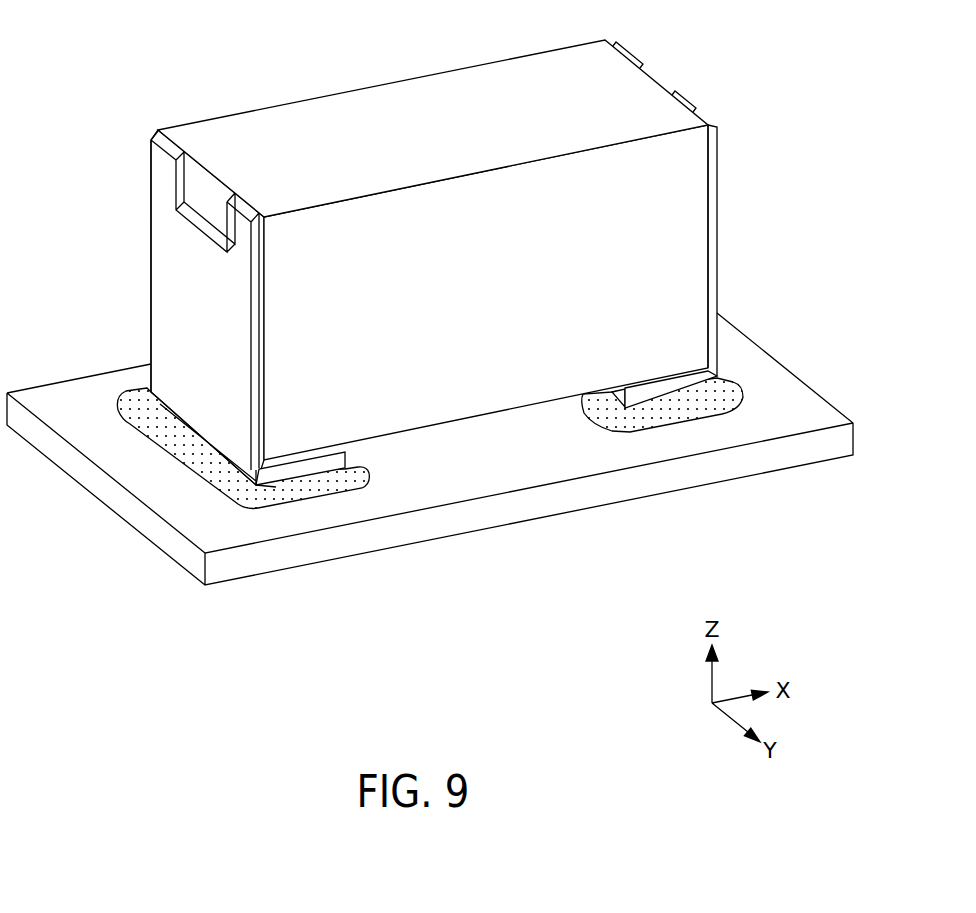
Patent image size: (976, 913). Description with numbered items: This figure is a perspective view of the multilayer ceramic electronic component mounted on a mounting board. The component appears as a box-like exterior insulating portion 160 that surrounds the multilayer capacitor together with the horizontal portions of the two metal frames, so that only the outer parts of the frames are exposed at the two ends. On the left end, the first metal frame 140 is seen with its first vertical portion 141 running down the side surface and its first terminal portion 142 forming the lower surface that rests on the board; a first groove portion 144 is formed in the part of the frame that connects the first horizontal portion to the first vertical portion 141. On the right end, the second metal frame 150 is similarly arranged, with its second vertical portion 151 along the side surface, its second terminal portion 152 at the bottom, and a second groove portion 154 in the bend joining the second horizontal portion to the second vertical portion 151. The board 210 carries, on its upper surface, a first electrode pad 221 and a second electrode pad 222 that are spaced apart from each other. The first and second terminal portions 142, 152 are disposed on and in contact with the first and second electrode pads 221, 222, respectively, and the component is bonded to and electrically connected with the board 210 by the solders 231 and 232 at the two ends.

The first metal frame 140 is at (209, 377).
The first vertical portion 141 is at (152, 316).
The first terminal portion 142 is at (312, 455).
The first groove portion 144 is at (178, 197).
The second metal frame 150 is at (730, 339).
The second vertical portion 151 is at (720, 263).
The second terminal portion 152 is at (658, 386).
The second groove portion 154 is at (664, 84).
The exterior insulating portion 160 is at (440, 257).
The board 210 is at (498, 510).
The first electrode pad 221 is at (370, 465).
The second electrode pad 222 is at (733, 388).
The solder 231 is at (276, 488).
The solder 232 is at (620, 410).